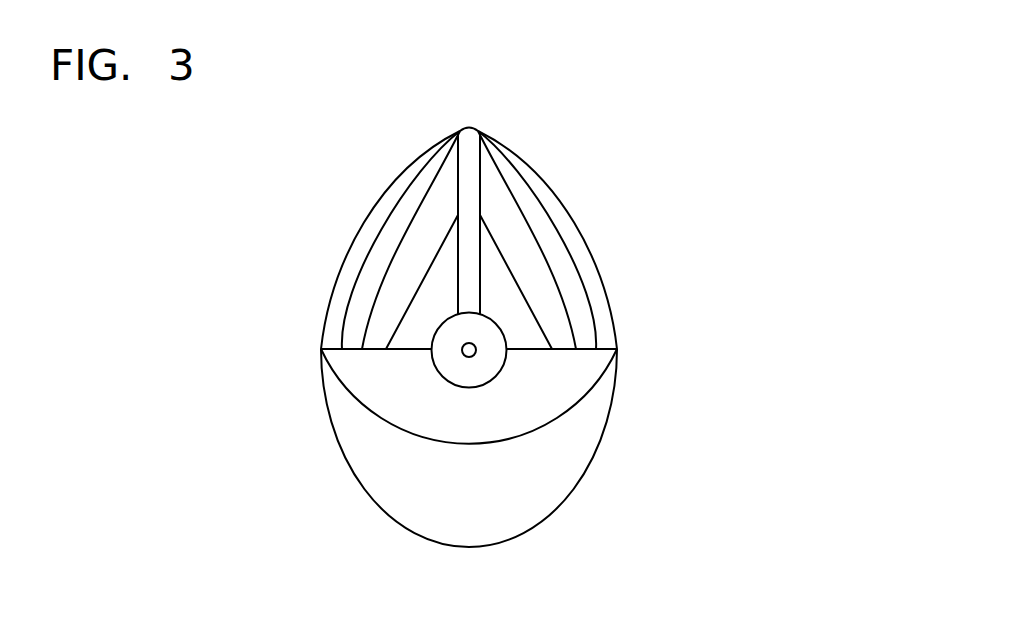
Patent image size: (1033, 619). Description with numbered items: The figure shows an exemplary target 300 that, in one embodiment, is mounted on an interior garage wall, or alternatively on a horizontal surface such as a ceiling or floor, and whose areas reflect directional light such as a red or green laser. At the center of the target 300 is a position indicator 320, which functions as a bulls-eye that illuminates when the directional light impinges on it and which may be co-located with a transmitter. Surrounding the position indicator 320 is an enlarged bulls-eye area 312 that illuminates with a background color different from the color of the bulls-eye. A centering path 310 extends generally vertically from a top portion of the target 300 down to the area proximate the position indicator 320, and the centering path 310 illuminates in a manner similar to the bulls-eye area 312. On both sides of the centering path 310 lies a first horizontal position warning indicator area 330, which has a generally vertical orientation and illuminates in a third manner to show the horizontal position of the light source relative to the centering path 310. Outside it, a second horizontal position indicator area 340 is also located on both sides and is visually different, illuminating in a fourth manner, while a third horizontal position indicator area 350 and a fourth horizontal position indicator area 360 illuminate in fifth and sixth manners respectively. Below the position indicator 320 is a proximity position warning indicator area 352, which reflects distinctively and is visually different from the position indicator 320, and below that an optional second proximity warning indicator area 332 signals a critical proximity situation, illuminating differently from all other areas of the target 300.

The target 300 is at (717, 52).
The centering path 310 is at (467, 147).
The enlarged bulls-eye area 312 is at (487, 362).
The position indicator 320 is at (465, 354).
The first horizontal position warning indicator area 330 is at (358, 262).
The second proximity warning indicator area 332 is at (548, 482).
The second horizontal position indicator area 340 is at (350, 310).
The third horizontal position indicator area 350 is at (440, 198).
The proximity position warning indicator area 352 is at (503, 431).
The fourth horizontal position indicator area 360 is at (438, 297).